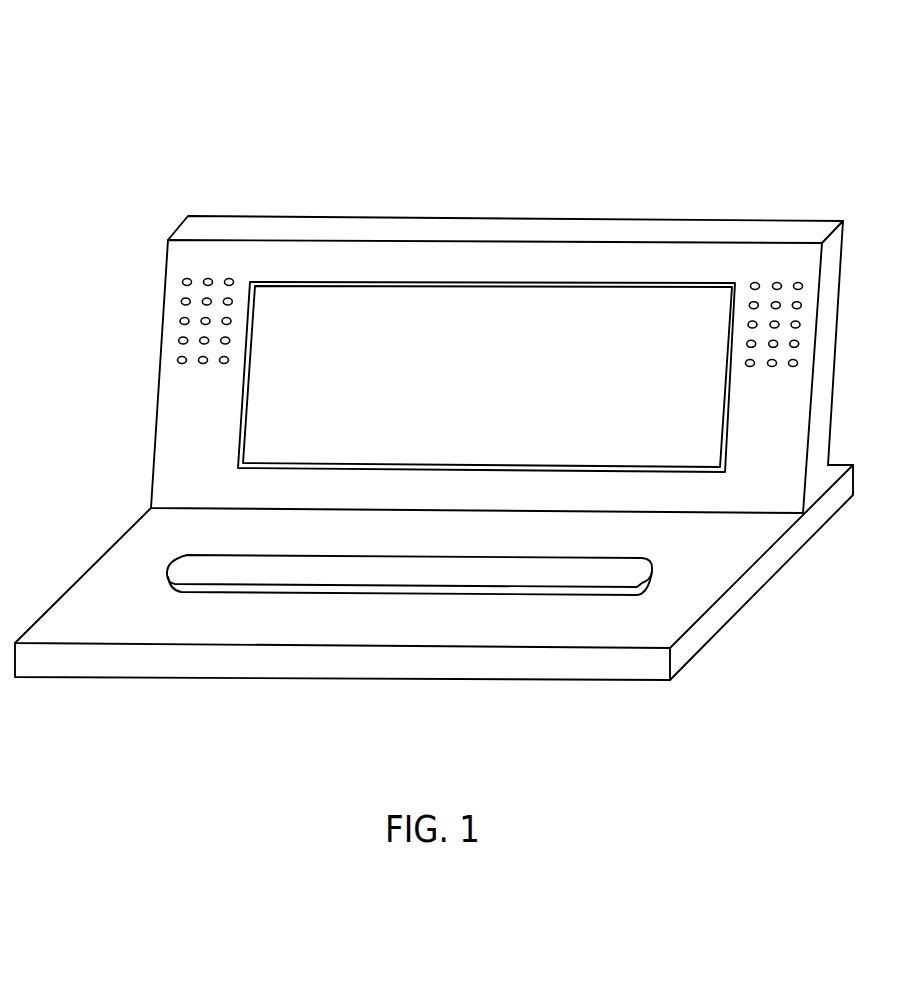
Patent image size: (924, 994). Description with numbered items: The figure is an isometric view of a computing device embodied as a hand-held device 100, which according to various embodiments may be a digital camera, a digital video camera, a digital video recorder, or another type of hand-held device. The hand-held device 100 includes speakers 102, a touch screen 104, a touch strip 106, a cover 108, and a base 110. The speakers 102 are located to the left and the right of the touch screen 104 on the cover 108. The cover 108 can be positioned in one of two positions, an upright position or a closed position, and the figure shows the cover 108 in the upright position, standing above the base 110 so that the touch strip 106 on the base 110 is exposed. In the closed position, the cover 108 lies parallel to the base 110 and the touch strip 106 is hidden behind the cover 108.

The hand-held device 100 is at (746, 104).
The speakers 102 is at (802, 282).
The touch screen 104 is at (532, 285).
The touch strip 106 is at (620, 572).
The cover 108 is at (820, 405).
The base 110 is at (785, 548).